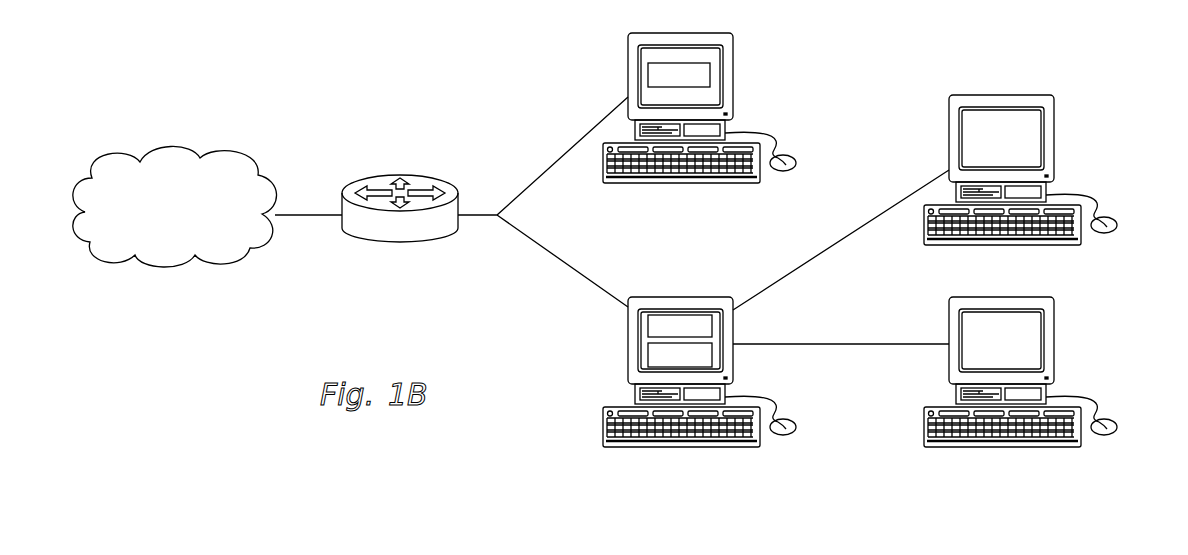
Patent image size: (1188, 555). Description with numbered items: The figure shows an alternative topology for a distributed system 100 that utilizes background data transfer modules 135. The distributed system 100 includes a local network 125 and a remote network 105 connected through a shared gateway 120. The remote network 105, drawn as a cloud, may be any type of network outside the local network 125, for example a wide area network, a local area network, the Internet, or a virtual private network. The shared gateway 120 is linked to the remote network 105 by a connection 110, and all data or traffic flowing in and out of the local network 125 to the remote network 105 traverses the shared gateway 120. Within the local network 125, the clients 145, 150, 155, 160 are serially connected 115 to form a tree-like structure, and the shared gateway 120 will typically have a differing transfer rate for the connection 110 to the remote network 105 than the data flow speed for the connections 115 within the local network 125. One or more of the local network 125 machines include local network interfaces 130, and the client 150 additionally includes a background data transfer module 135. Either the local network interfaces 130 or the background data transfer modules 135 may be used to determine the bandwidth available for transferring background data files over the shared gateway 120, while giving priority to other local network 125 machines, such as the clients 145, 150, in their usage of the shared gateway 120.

The distributed system 100 is at (1086, 54).
The remote network 105 is at (120, 168).
The connection to the remote network 110 is at (296, 183).
The connections within the local network 115 is at (527, 160).
The shared gateway 120 is at (352, 225).
The local network 125 is at (666, 281).
The local network interface 130 is at (648, 72).
The background data transfer module 135 is at (648, 352).
The client 145 is at (733, 76).
The client 150 is at (733, 352).
The client 155 is at (1056, 135).
The client 160 is at (1056, 337).